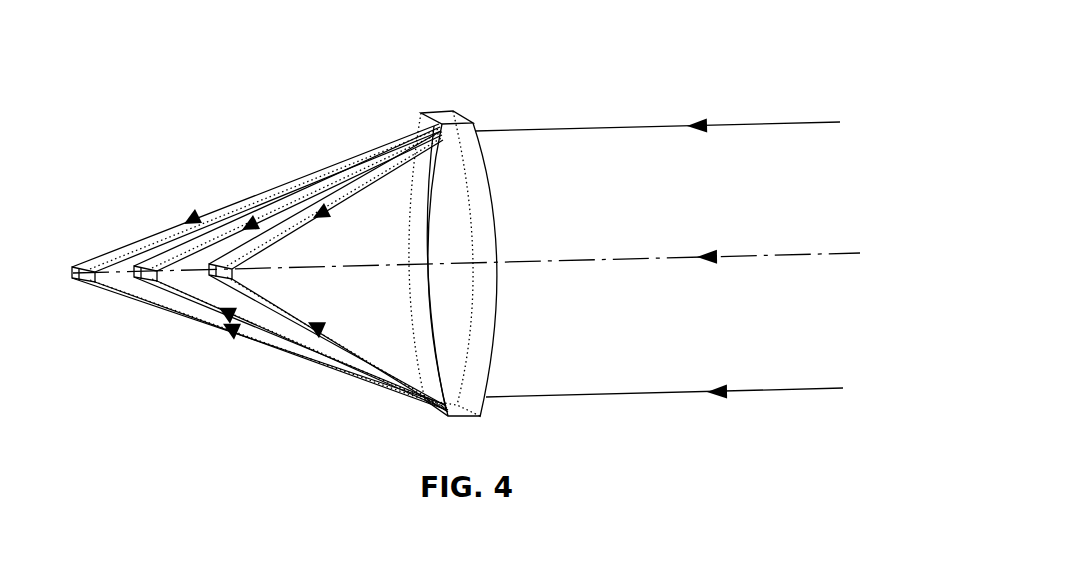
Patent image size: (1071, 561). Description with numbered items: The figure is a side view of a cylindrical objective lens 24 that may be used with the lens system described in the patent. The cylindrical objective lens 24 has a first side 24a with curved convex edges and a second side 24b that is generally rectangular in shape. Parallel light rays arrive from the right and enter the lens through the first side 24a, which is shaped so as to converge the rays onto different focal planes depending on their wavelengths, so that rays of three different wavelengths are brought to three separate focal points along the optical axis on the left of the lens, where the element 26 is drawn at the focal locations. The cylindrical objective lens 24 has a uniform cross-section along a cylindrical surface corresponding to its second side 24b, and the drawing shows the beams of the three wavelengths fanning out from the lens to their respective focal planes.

The cylindrical objective lens 24 is at (450, 269).
The first side 24a is at (484, 307).
The second side 24b is at (458, 113).
The light source array 26 is at (90, 281).